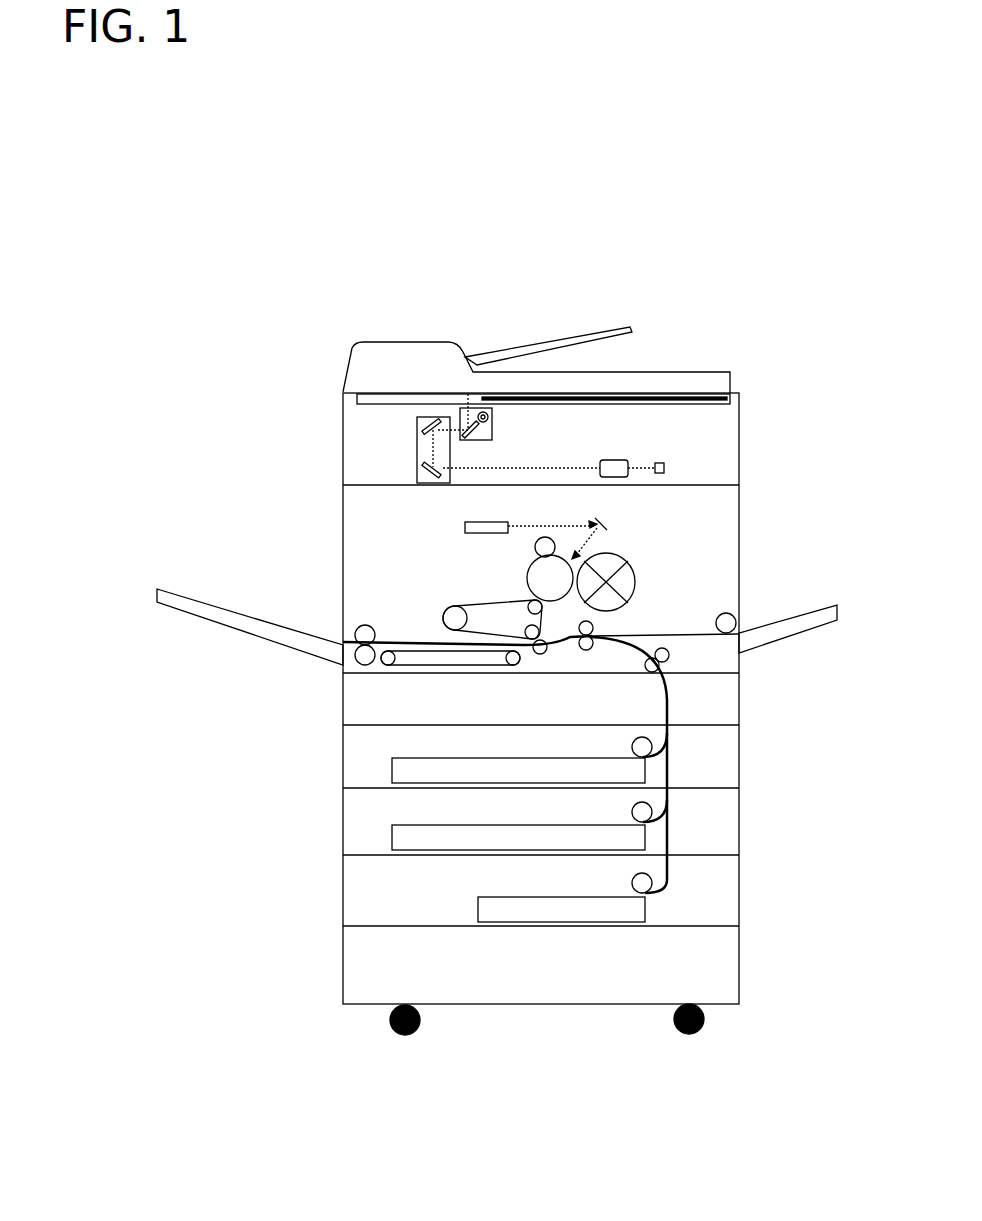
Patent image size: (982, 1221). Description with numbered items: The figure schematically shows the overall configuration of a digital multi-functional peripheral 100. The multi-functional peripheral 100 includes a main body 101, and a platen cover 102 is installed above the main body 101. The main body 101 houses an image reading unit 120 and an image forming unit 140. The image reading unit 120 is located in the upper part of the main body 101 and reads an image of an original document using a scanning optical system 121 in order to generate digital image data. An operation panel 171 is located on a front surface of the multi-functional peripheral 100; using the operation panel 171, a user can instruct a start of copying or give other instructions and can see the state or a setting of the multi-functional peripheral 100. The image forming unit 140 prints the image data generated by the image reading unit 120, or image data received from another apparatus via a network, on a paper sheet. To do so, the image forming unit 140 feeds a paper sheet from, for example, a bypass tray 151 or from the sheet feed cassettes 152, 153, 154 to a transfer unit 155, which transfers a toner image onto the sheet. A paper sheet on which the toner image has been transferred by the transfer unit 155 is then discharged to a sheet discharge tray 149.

The multi-functional peripheral 100 is at (570, 285).
The main body 101 is at (325, 497).
The platen cover 102 is at (325, 345).
The image reading unit 120 is at (739, 453).
The scanning optical system 121 is at (723, 425).
The image forming unit 140 is at (739, 547).
The sheet discharge tray 149 is at (178, 600).
The bypass tray 151 is at (782, 633).
The sheet feed cassette 152 is at (390, 768).
The sheet feed cassette 153 is at (390, 834).
The sheet feed cassette 154 is at (478, 908).
The transfer unit 155 is at (535, 654).
The operation panel 171 is at (732, 390).